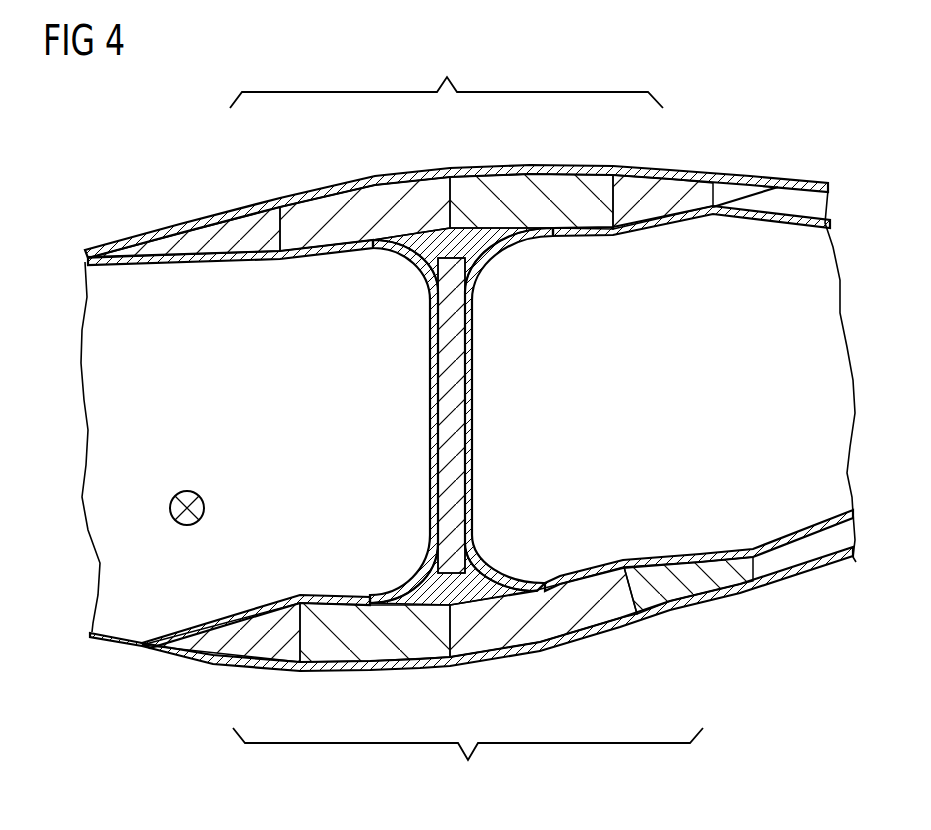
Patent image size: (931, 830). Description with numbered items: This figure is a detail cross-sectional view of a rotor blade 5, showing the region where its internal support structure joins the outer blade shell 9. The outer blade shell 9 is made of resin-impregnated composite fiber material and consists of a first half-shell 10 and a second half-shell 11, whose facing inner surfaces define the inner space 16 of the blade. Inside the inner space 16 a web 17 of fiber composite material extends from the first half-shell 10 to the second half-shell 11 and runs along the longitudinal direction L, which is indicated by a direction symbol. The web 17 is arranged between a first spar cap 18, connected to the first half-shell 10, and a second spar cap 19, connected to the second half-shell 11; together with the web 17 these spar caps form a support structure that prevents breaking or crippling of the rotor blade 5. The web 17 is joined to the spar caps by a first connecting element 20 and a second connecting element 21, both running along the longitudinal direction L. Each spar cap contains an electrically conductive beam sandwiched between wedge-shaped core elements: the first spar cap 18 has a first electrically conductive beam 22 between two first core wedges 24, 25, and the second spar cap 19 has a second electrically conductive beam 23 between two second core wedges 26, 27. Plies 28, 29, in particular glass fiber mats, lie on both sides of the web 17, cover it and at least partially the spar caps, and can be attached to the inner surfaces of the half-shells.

The rotor blade 5 is at (780, 111).
The outer blade shell 9 is at (703, 166).
The first half-shell 10 is at (818, 520).
The second half-shell 11 is at (802, 229).
The inner space 16 is at (263, 378).
The web 17 is at (458, 447).
The first spar cap 18 is at (468, 762).
The second spar cap 19 is at (446, 77).
The first connecting element 20 is at (424, 592).
The second connecting element 21 is at (418, 252).
The first electrically conductive beam 22 is at (386, 661).
The second electrically conductive beam 23 is at (394, 203).
The first core wedge 24 is at (270, 652).
The first core wedge 25 is at (684, 604).
The second core wedge 26 is at (250, 217).
The second core wedge 27 is at (645, 184).
The ply 28 is at (432, 412).
The ply 29 is at (473, 343).
The longitudinal direction L is at (204, 505).